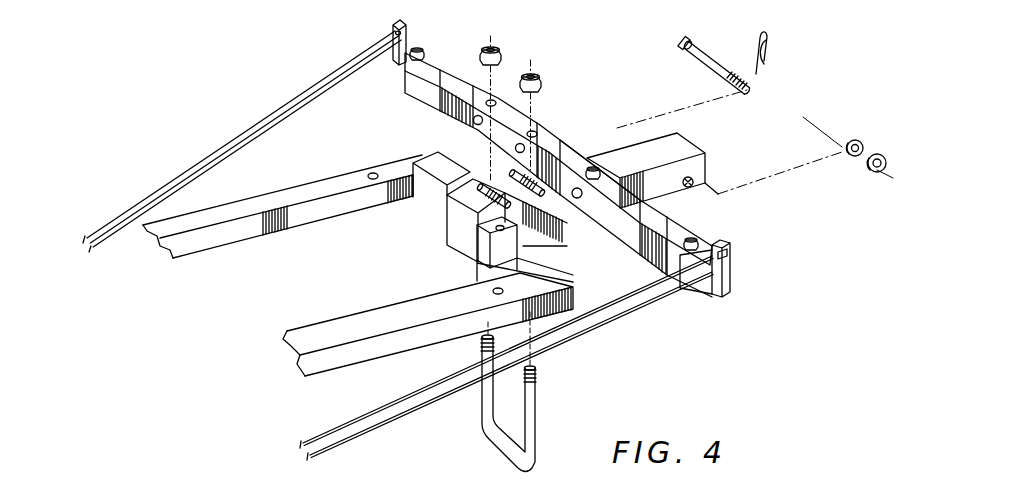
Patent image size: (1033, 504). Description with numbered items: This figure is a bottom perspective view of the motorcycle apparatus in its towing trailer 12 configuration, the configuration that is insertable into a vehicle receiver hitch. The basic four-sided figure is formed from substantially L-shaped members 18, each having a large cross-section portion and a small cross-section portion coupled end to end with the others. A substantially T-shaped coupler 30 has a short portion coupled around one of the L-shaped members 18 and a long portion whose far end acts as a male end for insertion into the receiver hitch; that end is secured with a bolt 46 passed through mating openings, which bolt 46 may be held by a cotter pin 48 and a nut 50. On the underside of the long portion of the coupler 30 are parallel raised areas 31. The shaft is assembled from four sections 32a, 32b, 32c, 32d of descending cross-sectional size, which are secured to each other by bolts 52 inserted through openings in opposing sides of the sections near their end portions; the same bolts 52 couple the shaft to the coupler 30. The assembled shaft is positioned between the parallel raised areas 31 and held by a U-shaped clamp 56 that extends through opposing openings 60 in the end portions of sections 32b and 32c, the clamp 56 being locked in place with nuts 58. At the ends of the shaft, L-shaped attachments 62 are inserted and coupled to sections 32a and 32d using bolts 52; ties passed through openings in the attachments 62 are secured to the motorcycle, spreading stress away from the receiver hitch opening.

The towing trailer 12 is at (282, 82).
The substantially L-shaped member 18 is at (328, 170).
The coupler 30 is at (612, 153).
The parallel raised areas 31 is at (482, 182).
The shaft section 32a is at (680, 224).
The shaft section 32b is at (570, 153).
The shaft section 32c is at (510, 117).
The shaft section 32d is at (422, 86).
The bolt 46 is at (723, 62).
The cotter pin 48 is at (762, 62).
The nut 50 is at (878, 152).
The bolts 52 is at (420, 48).
The U-shaped clamp 56 is at (538, 410).
The nuts 58 is at (500, 48).
The openings 60 is at (493, 100).
The L-shaped attachments 62 is at (382, 28).